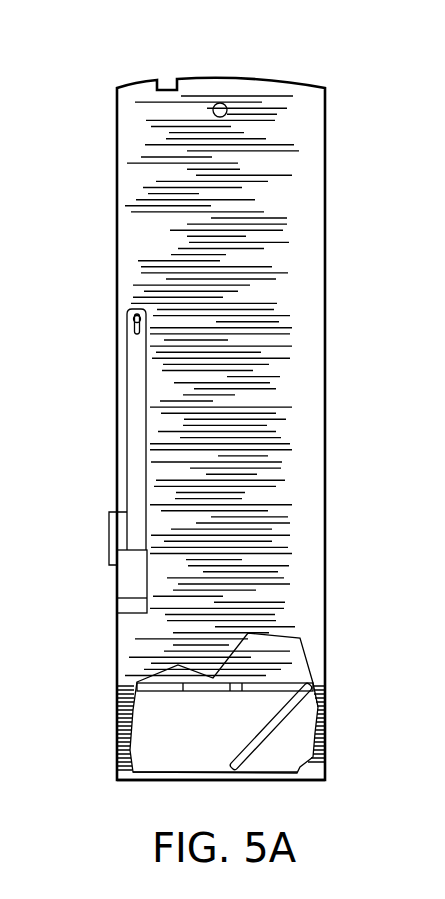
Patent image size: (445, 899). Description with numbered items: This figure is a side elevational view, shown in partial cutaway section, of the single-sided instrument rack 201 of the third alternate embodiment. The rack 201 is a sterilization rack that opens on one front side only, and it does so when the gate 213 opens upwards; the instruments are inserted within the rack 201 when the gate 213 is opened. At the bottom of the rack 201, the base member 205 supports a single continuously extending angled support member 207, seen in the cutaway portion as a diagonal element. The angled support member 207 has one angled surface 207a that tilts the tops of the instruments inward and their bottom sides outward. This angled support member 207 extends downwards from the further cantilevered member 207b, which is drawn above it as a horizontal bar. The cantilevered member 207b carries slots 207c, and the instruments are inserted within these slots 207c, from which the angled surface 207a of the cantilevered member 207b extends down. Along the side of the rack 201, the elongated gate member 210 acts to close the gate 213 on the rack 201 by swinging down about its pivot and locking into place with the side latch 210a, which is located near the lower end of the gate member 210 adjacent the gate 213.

The single-sided instrument rack 201 is at (212, 70).
The base member 205 is at (275, 782).
The angled support member 207 is at (263, 735).
The angled surface 207a is at (235, 756).
The cantilevered member 207b is at (273, 687).
The slots 207c is at (233, 688).
The gate member 210 is at (133, 387).
The side latch 210a is at (109, 550).
The gate 213 is at (109, 520).